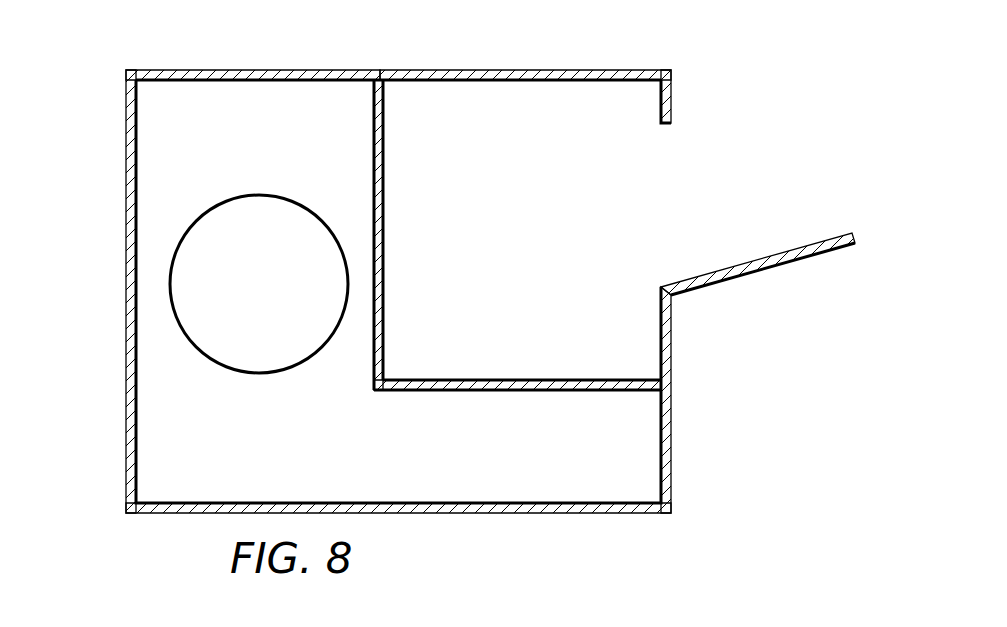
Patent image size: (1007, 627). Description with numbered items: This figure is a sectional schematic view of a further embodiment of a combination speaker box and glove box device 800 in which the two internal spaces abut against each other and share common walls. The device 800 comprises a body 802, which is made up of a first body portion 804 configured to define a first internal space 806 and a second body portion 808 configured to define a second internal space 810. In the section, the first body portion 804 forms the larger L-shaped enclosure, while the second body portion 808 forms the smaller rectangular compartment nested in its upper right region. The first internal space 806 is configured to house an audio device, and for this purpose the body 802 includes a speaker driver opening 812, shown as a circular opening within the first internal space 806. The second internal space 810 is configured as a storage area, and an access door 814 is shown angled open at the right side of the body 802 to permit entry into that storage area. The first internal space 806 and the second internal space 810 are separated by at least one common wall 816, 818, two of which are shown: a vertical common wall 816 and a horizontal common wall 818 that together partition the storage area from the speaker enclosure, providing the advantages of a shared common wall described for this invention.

The combination speaker box and glove box device 800 is at (726, 56).
The body 802 is at (116, 121).
The first body portion 804 is at (197, 70).
The first internal space 806 is at (255, 291).
The second body portion 808 is at (540, 70).
The second internal space 810 is at (522, 230).
The speaker driver opening 812 is at (175, 307).
The access door 814 is at (772, 267).
The common wall 816 is at (383, 137).
The common wall 818 is at (591, 378).